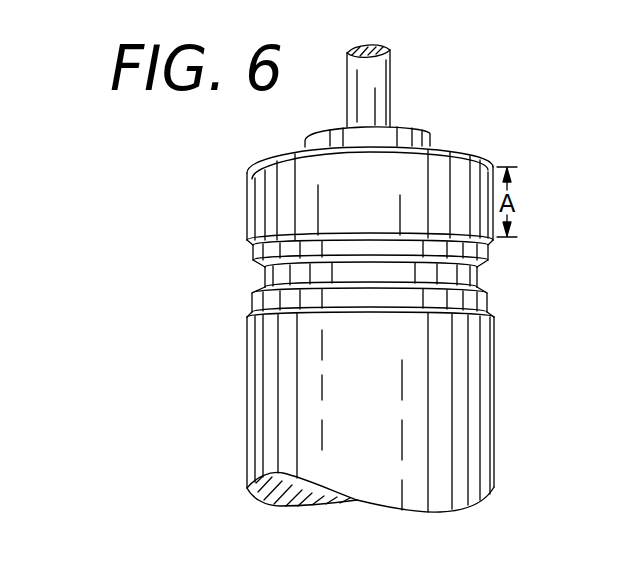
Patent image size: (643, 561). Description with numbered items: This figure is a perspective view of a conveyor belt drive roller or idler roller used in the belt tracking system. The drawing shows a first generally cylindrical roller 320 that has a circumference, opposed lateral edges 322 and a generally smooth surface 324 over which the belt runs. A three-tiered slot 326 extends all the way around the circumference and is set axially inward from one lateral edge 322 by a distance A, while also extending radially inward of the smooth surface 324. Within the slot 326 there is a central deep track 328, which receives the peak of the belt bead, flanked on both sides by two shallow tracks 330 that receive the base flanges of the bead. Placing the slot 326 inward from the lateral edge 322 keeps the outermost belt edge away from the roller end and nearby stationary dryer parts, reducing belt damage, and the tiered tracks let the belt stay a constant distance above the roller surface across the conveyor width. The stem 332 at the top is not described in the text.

The first generally cylindrical roller 320 is at (490, 430).
The lateral edge 322 is at (462, 149).
The smooth surface 324 is at (460, 395).
The three-tiered slot 326 is at (486, 272).
The central deep track 328 is at (478, 287).
The flanking shallow tracks 330 is at (490, 253).
The nozzle stem 332 is at (388, 93).